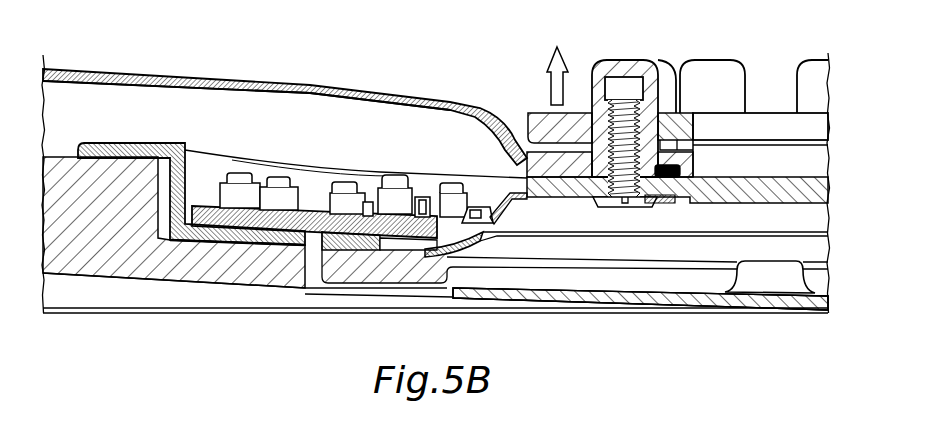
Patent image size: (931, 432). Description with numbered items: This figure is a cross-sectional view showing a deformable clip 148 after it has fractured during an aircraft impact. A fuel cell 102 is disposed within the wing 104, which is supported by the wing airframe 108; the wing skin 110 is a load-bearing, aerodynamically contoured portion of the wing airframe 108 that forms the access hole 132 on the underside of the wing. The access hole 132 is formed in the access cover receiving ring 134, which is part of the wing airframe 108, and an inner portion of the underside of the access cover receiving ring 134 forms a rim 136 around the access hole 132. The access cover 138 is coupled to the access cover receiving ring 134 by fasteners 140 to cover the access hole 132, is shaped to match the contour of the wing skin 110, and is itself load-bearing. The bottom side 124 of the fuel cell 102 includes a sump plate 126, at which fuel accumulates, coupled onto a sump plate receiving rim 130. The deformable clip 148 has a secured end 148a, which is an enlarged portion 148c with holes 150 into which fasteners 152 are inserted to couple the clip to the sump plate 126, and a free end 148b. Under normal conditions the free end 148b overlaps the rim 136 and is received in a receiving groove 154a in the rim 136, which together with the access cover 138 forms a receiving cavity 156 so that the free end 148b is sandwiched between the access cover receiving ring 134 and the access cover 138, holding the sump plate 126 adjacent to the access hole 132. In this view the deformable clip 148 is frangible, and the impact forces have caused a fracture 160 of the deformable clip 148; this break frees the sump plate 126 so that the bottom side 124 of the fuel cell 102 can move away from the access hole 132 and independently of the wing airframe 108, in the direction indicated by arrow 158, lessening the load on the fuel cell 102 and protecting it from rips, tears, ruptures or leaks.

The fuel cell 102 is at (102, 70).
The bottom side 124 is at (172, 78).
The wing 104 is at (181, 285).
The wing skin 110 is at (107, 278).
The wing airframe 108 is at (234, 286).
The rim 136 is at (339, 248).
The access cover receiving ring 134 is at (308, 210).
The fasteners 140 is at (395, 173).
The access hole 132 is at (455, 200).
The receiving groove 154a is at (380, 250).
The receiving cavity 156 is at (403, 250).
The free end 148b is at (428, 257).
The deformable clip 148 is at (483, 240).
The fracture 160 is at (484, 234).
The access cover 138 is at (660, 304).
The secured end 148a is at (667, 205).
The enlarged portion 148c is at (640, 299).
The sump plate receiving rim 130 is at (530, 113).
The sump plate 126 is at (753, 177).
The holes 150 is at (637, 208).
The fasteners 152 is at (603, 208).
The arrow 158 is at (547, 49).